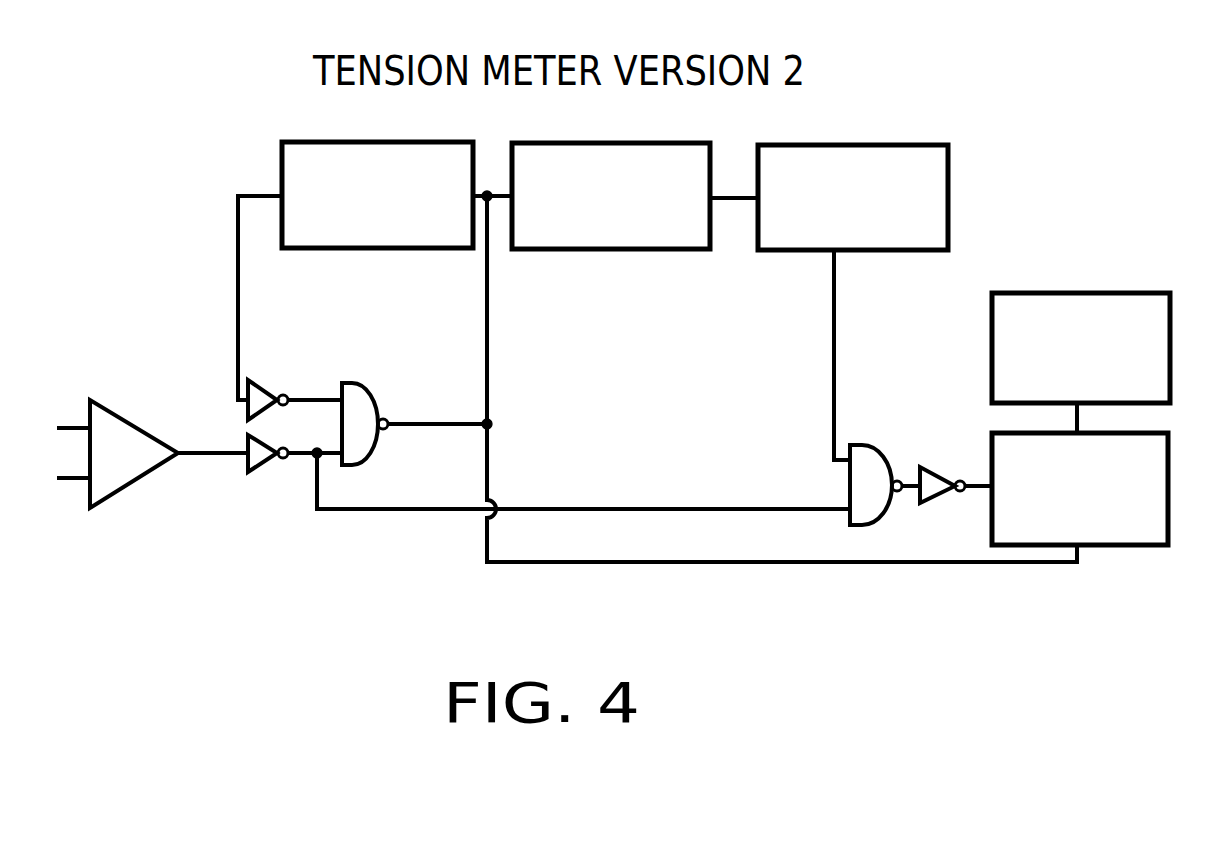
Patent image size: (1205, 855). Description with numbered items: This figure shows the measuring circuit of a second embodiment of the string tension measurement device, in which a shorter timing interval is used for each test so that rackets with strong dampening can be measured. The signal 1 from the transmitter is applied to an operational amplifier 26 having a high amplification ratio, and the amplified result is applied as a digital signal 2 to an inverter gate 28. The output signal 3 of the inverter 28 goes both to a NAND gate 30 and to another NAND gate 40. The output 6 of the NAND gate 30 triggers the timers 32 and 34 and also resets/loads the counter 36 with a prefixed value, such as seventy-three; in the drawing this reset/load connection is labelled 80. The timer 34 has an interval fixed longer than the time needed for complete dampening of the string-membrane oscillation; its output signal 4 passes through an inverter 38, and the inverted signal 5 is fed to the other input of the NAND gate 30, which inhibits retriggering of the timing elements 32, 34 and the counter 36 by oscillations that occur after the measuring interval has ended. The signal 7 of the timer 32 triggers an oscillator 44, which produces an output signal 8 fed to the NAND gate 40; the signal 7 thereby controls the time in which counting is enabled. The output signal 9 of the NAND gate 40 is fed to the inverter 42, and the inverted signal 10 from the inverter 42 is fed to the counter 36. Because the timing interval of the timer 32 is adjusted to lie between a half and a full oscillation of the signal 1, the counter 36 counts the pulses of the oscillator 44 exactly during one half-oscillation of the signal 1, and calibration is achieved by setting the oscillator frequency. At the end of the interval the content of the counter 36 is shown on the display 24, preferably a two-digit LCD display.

The signal 1 is at (66, 480).
The digital signal 2 is at (218, 450).
The output signal 3 is at (303, 457).
The output signal 4 is at (256, 196).
The inverted signal 5 is at (313, 398).
The output 6 is at (435, 423).
The signal 7 is at (726, 198).
The output signal 8 is at (836, 312).
The output signal 9 is at (910, 482).
The inverted signal 10 is at (977, 480).
The display 24 is at (1027, 293).
The operational amplifier 26 is at (138, 427).
The inverter gate 28 is at (262, 472).
The NAND gate 30 is at (373, 392).
The timer 32 is at (593, 251).
The timer 34 is at (381, 250).
The counter 36 is at (1115, 547).
The inverter 38 is at (266, 378).
The NAND gate 40 is at (858, 525).
The inverter 42 is at (940, 503).
The oscillator 44 is at (950, 203).
The reset/load line 80 is at (775, 397).